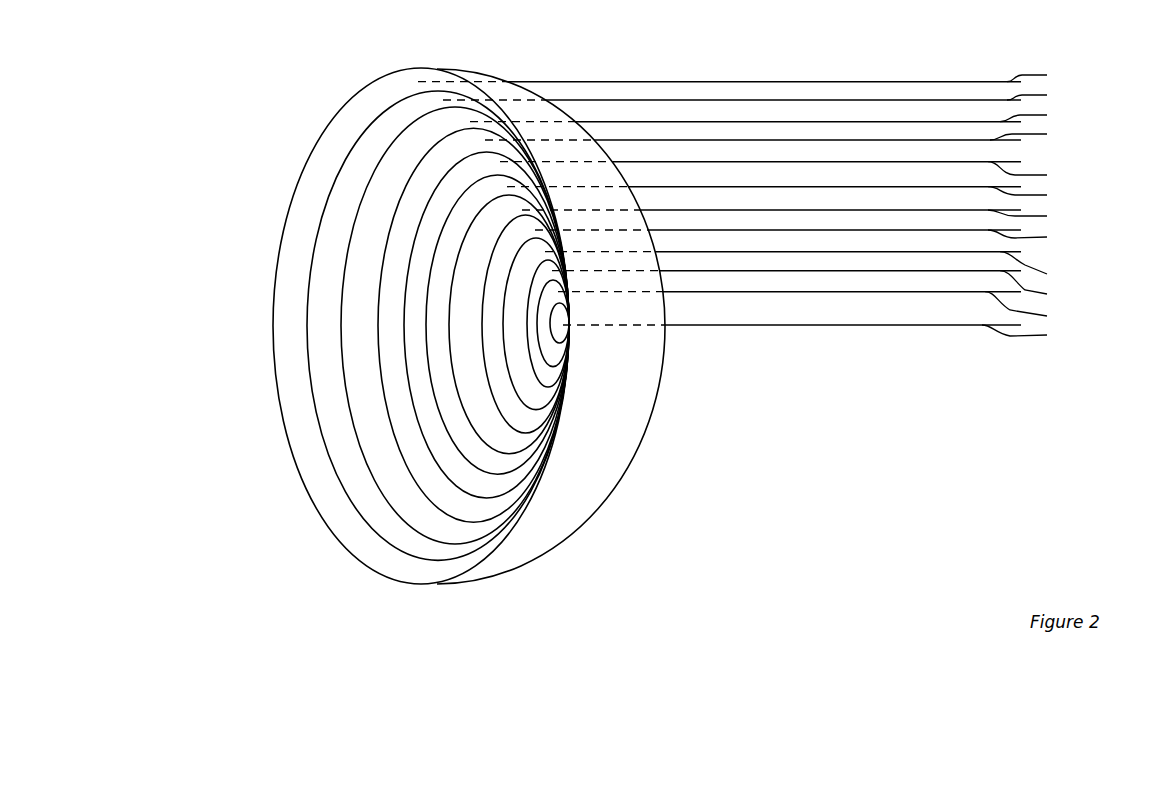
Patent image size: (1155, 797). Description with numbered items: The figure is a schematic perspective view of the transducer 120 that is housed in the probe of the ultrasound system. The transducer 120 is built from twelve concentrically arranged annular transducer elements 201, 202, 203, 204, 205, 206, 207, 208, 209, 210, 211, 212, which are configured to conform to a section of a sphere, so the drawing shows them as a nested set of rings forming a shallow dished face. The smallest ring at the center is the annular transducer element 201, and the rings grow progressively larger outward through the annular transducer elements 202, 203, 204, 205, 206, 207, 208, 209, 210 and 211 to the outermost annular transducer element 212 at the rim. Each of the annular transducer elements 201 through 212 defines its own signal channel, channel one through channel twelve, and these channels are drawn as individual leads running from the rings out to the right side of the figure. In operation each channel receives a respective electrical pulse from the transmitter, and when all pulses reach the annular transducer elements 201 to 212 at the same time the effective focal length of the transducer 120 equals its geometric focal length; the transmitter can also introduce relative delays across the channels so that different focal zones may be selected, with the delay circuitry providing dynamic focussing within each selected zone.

The transducer 120 is at (834, 547).
The annular transducer element 201 is at (565, 335).
The annular transducer element 202 is at (563, 355).
The annular transducer element 203 is at (560, 378).
The annular transducer element 204 is at (557, 402).
The annular transducer element 205 is at (552, 422).
The annular transducer element 206 is at (560, 427).
The annular transducer element 207 is at (507, 462).
The annular transducer element 208 is at (450, 450).
The annular transducer element 209 is at (422, 452).
The annular transducer element 210 is at (375, 210).
The annular transducer element 211 is at (380, 135).
The annular transducer element 212 is at (398, 83).